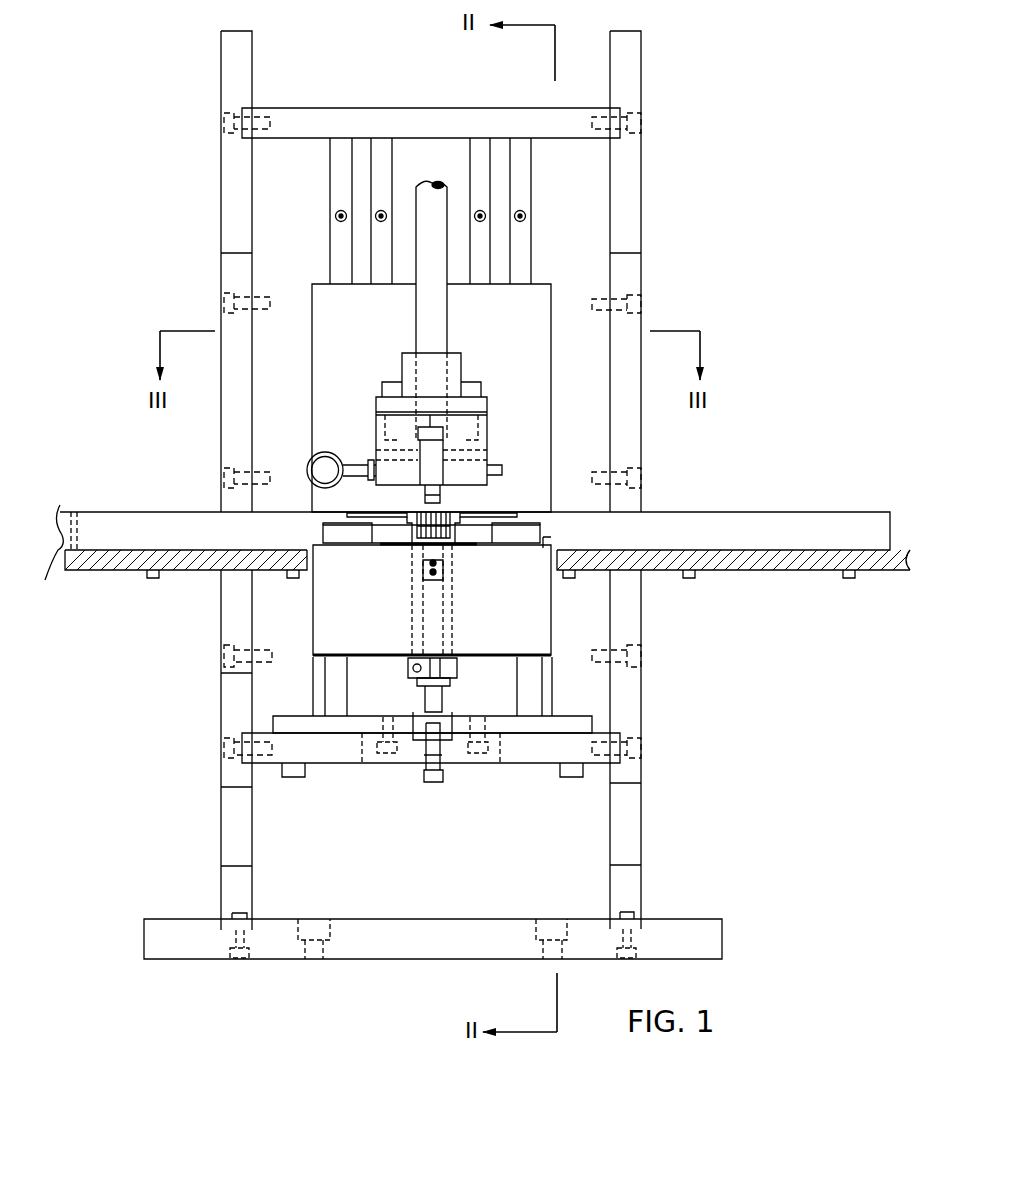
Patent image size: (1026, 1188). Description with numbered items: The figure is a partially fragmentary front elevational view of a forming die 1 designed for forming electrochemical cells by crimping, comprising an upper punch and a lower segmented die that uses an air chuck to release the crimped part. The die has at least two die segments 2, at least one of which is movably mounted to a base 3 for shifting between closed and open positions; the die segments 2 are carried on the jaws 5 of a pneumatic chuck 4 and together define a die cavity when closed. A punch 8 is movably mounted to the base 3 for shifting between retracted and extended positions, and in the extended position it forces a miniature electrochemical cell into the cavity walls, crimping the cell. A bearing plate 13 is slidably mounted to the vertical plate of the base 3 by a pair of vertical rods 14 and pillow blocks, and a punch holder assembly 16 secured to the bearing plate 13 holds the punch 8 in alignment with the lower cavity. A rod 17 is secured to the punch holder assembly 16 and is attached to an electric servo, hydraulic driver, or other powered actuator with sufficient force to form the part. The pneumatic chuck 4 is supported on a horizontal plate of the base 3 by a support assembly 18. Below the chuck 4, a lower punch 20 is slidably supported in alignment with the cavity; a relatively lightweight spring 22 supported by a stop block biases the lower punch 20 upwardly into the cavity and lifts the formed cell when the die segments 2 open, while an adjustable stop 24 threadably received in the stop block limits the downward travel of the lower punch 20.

The forming die 1 is at (720, 200).
The die segments 2 is at (445, 528).
The base 3 is at (655, 62).
The pneumatic chuck 4 is at (318, 607).
The jaws 5 is at (540, 528).
The punch 8 is at (425, 500).
The bearing plate 13 is at (553, 300).
The vertical rods 14 is at (357, 150).
The punch holder assembly 16 is at (490, 404).
The rod 17 is at (425, 208).
The support assembly 18 is at (312, 690).
The lower punch 20 is at (425, 695).
The spring 22 is at (455, 700).
The adjustable stop 24 is at (432, 785).